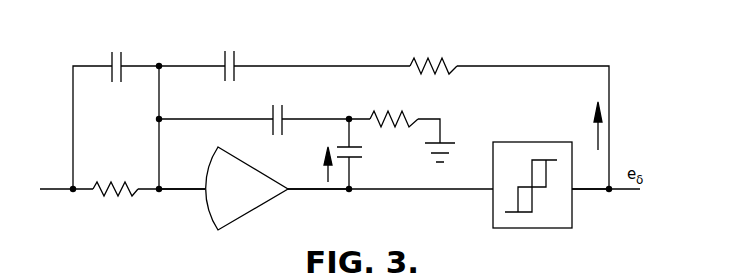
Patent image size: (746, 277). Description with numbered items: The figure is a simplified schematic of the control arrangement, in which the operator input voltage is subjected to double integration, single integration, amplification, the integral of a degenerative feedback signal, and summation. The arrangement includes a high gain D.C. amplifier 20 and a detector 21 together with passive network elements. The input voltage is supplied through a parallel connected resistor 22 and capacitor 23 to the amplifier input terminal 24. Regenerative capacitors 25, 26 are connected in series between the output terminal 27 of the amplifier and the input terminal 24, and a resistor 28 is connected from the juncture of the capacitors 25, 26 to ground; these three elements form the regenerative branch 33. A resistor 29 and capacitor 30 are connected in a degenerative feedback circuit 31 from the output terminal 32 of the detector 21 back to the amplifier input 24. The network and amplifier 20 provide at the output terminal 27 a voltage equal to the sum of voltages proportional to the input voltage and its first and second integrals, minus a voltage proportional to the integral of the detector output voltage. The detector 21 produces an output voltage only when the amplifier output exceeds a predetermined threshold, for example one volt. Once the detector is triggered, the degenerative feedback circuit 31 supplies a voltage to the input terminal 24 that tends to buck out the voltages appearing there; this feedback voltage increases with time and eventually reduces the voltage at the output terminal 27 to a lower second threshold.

The high gain D.C. amplifier 20 is at (256, 209).
The detector 21 is at (492, 153).
The resistor 22 is at (117, 197).
The capacitor 23 is at (112, 80).
The amplifier input terminal 24 is at (205, 192).
The regenerative capacitor 25 is at (355, 158).
The regenerative capacitor 26 is at (273, 133).
The amplifier output terminal 27 is at (290, 191).
The resistor 28 is at (402, 125).
The resistor 29 is at (440, 70).
The capacitor 30 is at (234, 80).
The degenerative feedback circuit 31 is at (601, 135).
The detector output terminal 32 is at (575, 190).
The regenerative branch 33 is at (318, 165).